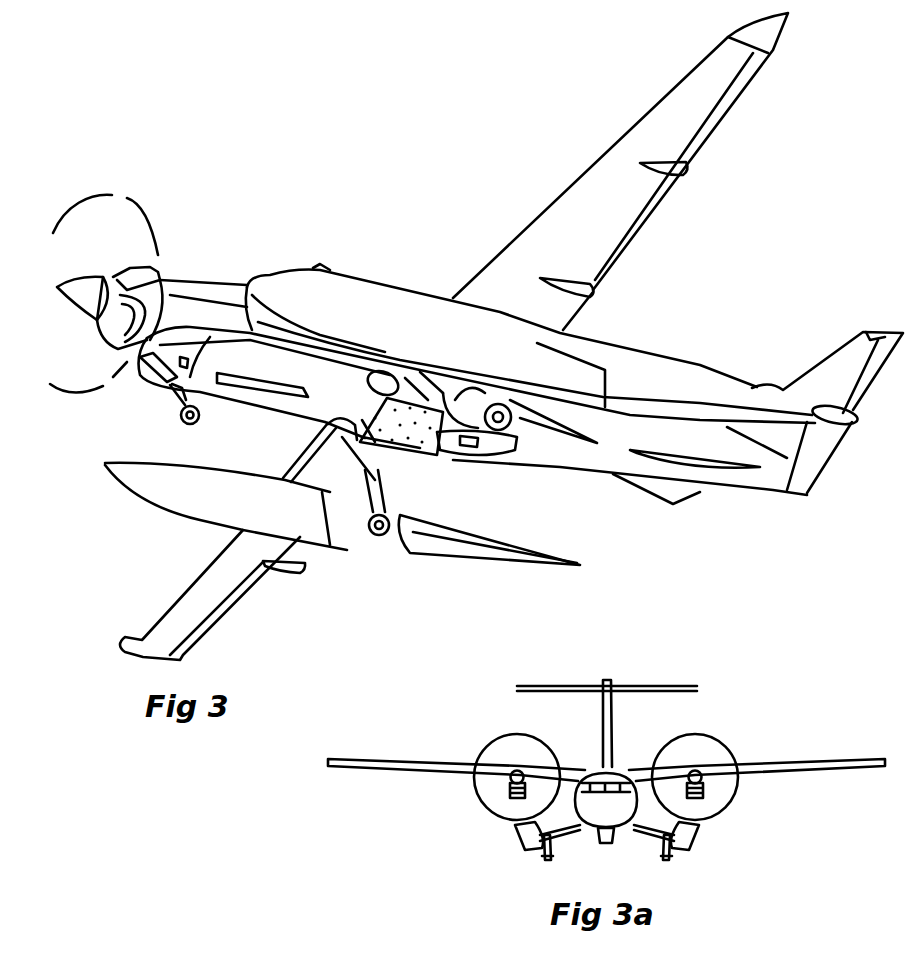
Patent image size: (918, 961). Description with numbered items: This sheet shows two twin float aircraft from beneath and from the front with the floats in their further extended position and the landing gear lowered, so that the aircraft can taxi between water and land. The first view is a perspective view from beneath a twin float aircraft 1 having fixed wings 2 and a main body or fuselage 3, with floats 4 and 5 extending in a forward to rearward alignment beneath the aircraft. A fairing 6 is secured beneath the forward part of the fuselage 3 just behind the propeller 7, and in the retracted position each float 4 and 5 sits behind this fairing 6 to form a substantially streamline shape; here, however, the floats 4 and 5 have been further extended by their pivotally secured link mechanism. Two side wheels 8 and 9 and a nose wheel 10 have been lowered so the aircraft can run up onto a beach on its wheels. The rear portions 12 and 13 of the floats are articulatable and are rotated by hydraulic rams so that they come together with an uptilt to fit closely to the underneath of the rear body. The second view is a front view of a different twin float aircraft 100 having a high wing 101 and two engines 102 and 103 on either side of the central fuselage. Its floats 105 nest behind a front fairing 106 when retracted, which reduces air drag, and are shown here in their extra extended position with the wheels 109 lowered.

In FIG. 3, the twin float aircraft 1 is at (197, 288).
In FIG. 3, the fixed wings 2 is at (650, 207).
In FIG. 3, the fuselage 3 is at (625, 465).
In FIG. 3, the float 4 is at (363, 292).
In FIG. 3, the float 5 is at (200, 508).
In FIG. 3, the fairing 6 is at (137, 375).
In FIG. 3, the propeller 7 is at (153, 230).
In FIG. 3, the side wheel 8 is at (510, 440).
In FIG. 3, the side wheel 9 is at (381, 537).
In FIG. 3, the nose wheel 10 is at (182, 427).
In FIG. 3, the articulatable rear portion 12 is at (663, 373).
In FIG. 3, the articulatable rear portion 13 is at (473, 550).
In FIG. 3A, the twin float aircraft 100 is at (612, 733).
In FIG. 3A, the high wing 101 is at (457, 770).
In FIG. 3A, the engine 102 is at (517, 770).
In FIG. 3A, the engine 103 is at (698, 772).
In FIG. 3A, the floats 105 is at (523, 843).
In FIG. 3A, the front fairing 106 is at (603, 847).
In FIG. 3A, the wheels 109 is at (547, 860).